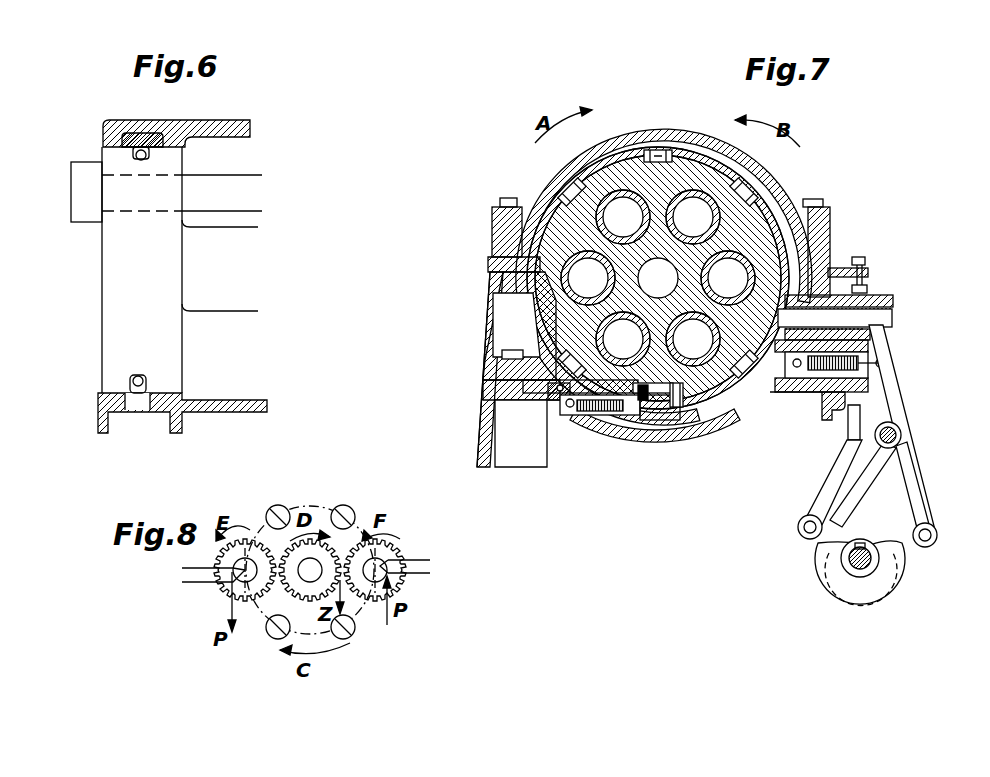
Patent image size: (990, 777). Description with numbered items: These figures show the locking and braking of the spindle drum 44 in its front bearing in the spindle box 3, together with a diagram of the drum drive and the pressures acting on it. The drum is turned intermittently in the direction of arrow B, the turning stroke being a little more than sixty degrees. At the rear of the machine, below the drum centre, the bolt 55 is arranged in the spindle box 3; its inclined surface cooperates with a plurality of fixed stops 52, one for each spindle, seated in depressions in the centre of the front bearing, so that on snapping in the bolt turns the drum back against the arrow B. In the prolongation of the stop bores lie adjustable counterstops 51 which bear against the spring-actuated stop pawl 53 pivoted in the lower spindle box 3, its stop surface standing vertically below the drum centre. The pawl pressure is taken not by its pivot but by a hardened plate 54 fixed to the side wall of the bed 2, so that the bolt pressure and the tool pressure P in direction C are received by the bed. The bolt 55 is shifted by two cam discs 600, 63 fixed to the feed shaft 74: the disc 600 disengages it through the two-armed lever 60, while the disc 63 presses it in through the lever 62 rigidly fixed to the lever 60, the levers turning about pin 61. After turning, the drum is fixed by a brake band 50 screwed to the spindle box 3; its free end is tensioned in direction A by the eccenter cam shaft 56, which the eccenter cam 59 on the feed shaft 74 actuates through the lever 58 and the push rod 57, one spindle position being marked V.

In FIG. 7, the bed 2 is at (478, 420).
In FIG. 6, the spindle box 3 is at (214, 405).
In FIG. 7, the spindle box 3 is at (532, 182).
In FIG. 6, the spindle drum 44 is at (108, 253).
In FIG. 7, the spindle drum 44 is at (758, 235).
In FIG. 6, the brake band 50 is at (153, 133).
In FIG. 7, the brake band 50 is at (660, 140).
In FIG. 7, the adjustable counterstop 51 is at (640, 402).
In FIG. 6, the fixed stop 52 is at (130, 381).
In FIG. 7, the fixed stop 52 is at (678, 408).
In FIG. 7, the stop pawl 53 is at (566, 408).
In FIG. 7, the hardened plate 54 is at (556, 392).
In FIG. 7, the bolt 55 is at (892, 321).
In FIG. 7, the eccenter cam shaft 56 is at (838, 270).
In FIG. 7, the push rod 57 is at (867, 287).
In FIG. 7, the lever 58 is at (840, 490).
In FIG. 7, the eccenter cam 59 is at (812, 543).
In FIG. 7, the two-armed lever 60 is at (890, 385).
In FIG. 7, the pivot pin 61 is at (900, 437).
In FIG. 7, the lever 62 is at (918, 496).
In FIG. 7, the cam disc 63 is at (905, 552).
In FIG. 7, the feed shaft 74 is at (866, 562).
In FIG. 7, the cam disc 600 is at (858, 600).
In FIG. 6, the chamber V is at (80, 192).